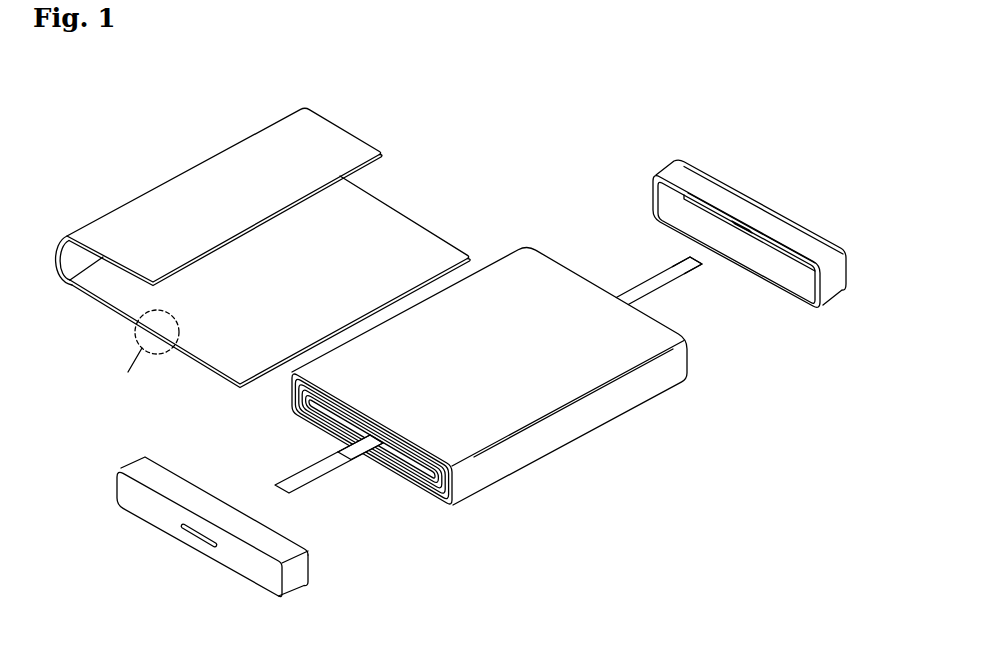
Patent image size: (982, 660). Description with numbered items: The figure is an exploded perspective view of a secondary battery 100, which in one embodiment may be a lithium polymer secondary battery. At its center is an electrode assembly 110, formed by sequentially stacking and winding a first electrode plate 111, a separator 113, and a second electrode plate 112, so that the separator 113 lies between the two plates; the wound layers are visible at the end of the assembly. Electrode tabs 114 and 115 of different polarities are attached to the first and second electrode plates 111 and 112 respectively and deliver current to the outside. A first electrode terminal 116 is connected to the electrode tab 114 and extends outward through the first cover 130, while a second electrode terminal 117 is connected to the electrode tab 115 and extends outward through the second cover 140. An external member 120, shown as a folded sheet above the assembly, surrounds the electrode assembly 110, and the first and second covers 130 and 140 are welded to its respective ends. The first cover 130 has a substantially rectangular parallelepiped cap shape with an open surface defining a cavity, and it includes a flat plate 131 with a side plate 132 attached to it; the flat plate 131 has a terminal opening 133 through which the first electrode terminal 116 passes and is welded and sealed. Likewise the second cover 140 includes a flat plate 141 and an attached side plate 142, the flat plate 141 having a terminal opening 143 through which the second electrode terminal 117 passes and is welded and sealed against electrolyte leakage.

The secondary battery 100 is at (84, 86).
The electrode assembly 110 is at (584, 446).
The first electrode plate 111 is at (460, 478).
The second electrode plate 112 is at (460, 494).
The separator 113 is at (457, 500).
The electrode tab 114 is at (633, 305).
The electrode tab 115 is at (370, 458).
The first electrode terminal 116 is at (697, 268).
The second electrode terminal 117 is at (302, 488).
The external member 120 is at (140, 189).
The first cover 130 is at (746, 207).
The flat plate 131 is at (797, 261).
The side plate 132 is at (825, 248).
The terminal opening 133 is at (742, 229).
The second cover 140 is at (188, 543).
The flat plate 141 is at (237, 573).
The side plate 142 is at (294, 581).
The terminal opening 143 is at (190, 534).